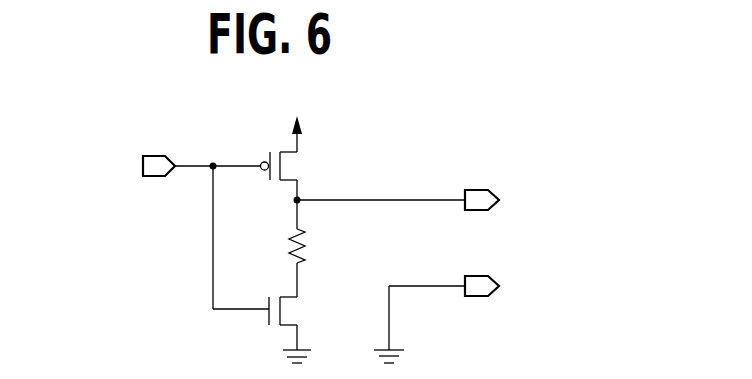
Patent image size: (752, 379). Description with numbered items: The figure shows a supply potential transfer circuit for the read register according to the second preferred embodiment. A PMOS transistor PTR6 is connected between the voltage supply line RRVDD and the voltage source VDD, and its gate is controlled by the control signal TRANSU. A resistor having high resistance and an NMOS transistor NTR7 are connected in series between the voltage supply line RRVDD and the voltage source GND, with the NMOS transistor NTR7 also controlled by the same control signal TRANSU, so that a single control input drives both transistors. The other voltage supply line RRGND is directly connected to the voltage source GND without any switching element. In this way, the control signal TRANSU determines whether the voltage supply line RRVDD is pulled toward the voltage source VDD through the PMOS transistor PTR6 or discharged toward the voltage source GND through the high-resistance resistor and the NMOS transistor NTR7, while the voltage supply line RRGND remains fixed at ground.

The PMOS transistor PTR6 is at (322, 153).
The NMOS transistor NTR7 is at (322, 306).
The control signal TRANSU is at (117, 168).
The voltage supply line RRVDD is at (447, 200).
The voltage supply line RRGND is at (495, 310).
The voltage source VDD is at (296, 114).
The voltage source GND is at (346, 364).